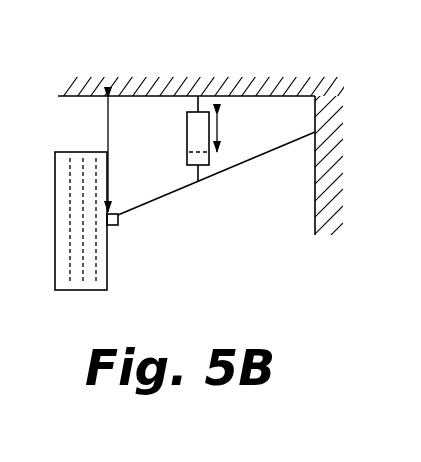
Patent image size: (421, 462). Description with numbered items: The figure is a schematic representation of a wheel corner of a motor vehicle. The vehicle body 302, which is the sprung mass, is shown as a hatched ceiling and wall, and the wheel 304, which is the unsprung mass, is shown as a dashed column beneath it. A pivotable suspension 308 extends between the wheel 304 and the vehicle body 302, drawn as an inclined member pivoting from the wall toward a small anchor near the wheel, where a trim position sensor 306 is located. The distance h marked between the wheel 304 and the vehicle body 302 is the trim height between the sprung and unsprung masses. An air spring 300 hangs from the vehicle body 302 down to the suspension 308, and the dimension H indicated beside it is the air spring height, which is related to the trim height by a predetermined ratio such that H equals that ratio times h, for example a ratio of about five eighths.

The air spring 300 is at (186, 141).
The vehicle body (sprung mass) 302 is at (254, 65).
The wheel (unsprung mass) 304 is at (55, 207).
The trim position sensor 306 is at (112, 227).
The pivotable suspension 308 is at (167, 200).